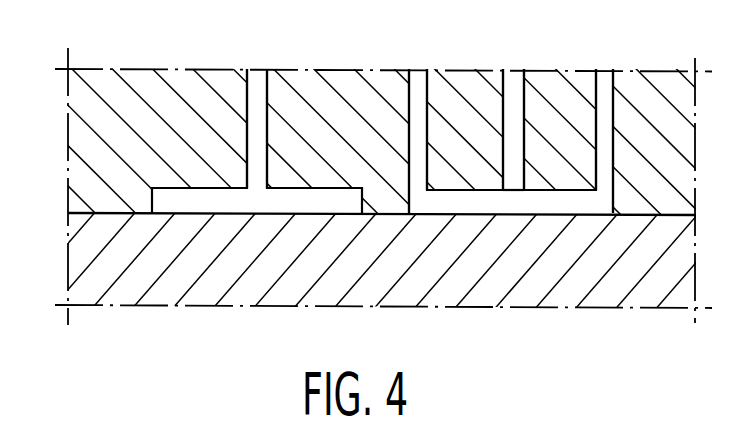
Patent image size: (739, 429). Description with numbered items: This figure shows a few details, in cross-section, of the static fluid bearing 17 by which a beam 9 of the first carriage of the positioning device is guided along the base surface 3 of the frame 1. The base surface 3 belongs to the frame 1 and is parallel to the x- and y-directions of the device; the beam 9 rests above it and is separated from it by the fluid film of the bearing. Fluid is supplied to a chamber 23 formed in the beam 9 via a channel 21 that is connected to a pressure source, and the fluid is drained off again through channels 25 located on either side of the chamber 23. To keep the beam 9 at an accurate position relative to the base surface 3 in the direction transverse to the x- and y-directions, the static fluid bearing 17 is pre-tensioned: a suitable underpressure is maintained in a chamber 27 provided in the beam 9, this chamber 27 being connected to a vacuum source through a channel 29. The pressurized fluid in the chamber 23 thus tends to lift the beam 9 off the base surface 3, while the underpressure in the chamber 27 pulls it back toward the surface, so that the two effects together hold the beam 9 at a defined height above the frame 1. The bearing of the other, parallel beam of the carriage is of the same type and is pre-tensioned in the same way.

The frame 1 is at (288, 290).
The base surface 3 is at (112, 218).
The beam 9 is at (191, 83).
The static fluid bearing 17 is at (350, 203).
The channel 21 is at (517, 83).
The chamber 23 is at (523, 200).
The channels 25 is at (422, 83).
The chamber 27 is at (258, 205).
The channel 29 is at (258, 83).